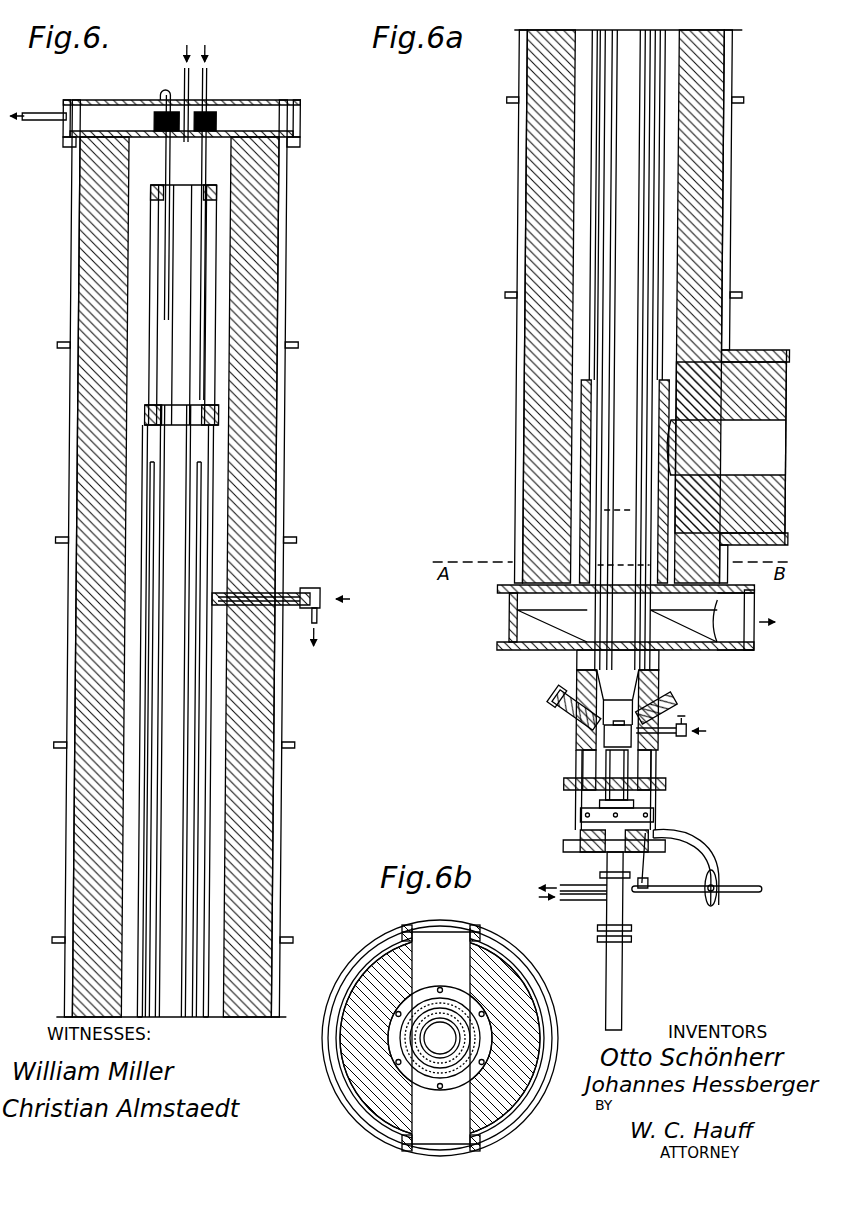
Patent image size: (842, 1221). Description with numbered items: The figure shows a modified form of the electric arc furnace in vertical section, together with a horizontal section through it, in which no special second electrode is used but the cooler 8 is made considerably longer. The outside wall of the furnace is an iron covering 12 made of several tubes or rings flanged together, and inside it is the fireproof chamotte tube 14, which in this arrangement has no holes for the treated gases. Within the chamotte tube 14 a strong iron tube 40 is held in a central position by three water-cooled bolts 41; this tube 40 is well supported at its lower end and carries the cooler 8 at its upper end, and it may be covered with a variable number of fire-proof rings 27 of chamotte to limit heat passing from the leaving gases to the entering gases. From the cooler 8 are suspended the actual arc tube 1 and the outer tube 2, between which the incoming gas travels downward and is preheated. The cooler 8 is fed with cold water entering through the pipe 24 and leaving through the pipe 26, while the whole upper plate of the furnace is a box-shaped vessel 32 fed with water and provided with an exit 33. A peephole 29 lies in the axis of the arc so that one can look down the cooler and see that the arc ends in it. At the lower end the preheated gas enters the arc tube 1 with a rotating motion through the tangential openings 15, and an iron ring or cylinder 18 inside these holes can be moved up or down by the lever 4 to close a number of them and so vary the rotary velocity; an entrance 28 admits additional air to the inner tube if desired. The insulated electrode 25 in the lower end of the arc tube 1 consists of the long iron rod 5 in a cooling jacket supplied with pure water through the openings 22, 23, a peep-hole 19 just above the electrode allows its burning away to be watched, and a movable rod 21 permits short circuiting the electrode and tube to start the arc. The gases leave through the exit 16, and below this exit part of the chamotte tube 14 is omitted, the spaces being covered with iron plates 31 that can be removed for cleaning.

In FIG. 6, the arc tube 1 is at (172, 711).
In FIG. 6A, the arc tube 1 is at (626, 350).
In FIG. 6B, the arc tube 1 is at (440, 1038).
In FIG. 6, the tube 2 is at (150, 690).
In FIG. 6A, the tube 2 is at (598, 324).
In FIG. 6B, the tube 2 is at (441, 1062).
In FIG. 6A, the lever 4 is at (697, 874).
In FIG. 6A, the iron rod 5 is at (617, 941).
In FIG. 6, the cooler 8 is at (183, 305).
In FIG. 6, the iron covering 12 is at (278, 835).
In FIG. 6A, the iron covering 12 is at (731, 264).
In FIG. 6B, the iron covering 12 is at (336, 1062).
In FIG. 6, the chamotte tube 14 is at (78, 792).
In FIG. 6A, the chamotte tube 14 is at (525, 348).
In FIG. 6B, the chamotte tube 14 is at (362, 1086).
In FIG. 6A, the tangential openings 15 is at (640, 770).
In FIG. 6A, the common passage 16 is at (727, 447).
In FIG. 6A, the iron ring or cylinder 18 is at (600, 772).
In FIG. 6A, the peep-hole 19 is at (566, 713).
In FIG. 6A, the movable rod 21 is at (676, 707).
In FIG. 6A, the opening 22 is at (596, 900).
In FIG. 6A, the opening 23 is at (573, 878).
In FIG. 6, the pipe 24 is at (204, 86).
In FIG. 6A, the insulated electrode 25 is at (617, 734).
In FIG. 6, the pipe 26 is at (155, 91).
In FIG. 6A, the fire-proof rings 27 is at (583, 486).
In FIG. 6A, the entrance 28 is at (671, 739).
In FIG. 6, the peephole 29 is at (179, 73).
In FIG. 6B, the iron plates 31 is at (450, 923).
In FIG. 6, the box-shaped vessel 32 is at (181, 118).
In FIG. 6, the exit 33 is at (46, 124).
In FIG. 6, the iron tube 40 is at (141, 634).
In FIG. 6A, the iron tube 40 is at (590, 266).
In FIG. 6B, the iron tube 40 is at (453, 1003).
In FIG. 6, the bolts 41 is at (299, 592).